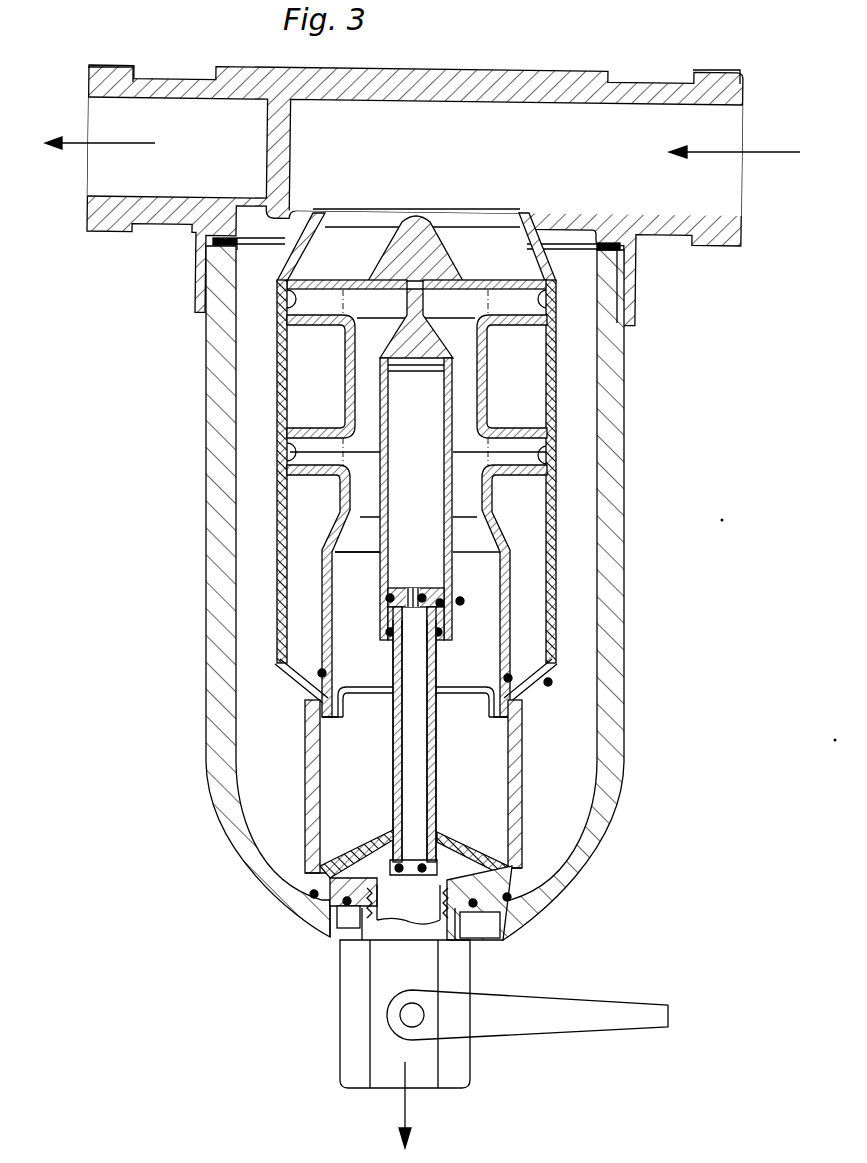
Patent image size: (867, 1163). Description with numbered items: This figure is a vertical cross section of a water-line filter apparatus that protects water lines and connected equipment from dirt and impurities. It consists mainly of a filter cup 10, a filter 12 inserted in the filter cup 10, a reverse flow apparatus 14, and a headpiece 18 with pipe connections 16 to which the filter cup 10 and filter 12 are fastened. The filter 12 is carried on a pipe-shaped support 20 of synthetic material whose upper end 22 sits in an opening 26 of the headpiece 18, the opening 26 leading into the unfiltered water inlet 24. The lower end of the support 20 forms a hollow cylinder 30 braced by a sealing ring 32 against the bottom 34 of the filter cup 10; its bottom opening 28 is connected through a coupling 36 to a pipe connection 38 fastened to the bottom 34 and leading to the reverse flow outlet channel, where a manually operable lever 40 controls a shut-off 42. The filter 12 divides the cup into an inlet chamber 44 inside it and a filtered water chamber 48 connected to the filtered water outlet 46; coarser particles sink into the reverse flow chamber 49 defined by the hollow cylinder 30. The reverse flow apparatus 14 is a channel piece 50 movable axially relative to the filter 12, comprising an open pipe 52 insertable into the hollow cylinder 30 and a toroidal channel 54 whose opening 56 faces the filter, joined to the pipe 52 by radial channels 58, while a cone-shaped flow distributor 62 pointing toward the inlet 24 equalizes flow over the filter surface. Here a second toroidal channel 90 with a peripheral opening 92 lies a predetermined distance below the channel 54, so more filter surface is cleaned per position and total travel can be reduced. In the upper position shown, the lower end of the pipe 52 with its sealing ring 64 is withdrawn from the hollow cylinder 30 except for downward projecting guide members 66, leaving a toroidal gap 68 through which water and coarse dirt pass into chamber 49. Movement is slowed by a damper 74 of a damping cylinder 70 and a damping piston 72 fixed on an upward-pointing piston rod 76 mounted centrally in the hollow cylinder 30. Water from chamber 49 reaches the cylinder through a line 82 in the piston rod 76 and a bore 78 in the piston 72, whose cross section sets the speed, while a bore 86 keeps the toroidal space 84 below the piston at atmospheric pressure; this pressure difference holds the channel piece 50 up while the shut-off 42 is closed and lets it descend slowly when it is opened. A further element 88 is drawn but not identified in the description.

The filter cup 10 is at (617, 404).
The filter 12 is at (558, 546).
The reverse flow apparatus 14 is at (497, 523).
The pipe connections 16 is at (98, 67).
The headpiece 18 is at (478, 80).
The pipe-shaped support 20 is at (548, 682).
The upper end 22 is at (527, 212).
The unfiltered water inlet 24 is at (722, 207).
The opening 26 is at (312, 222).
The bottom opening 28 is at (430, 930).
The hollow cylinder 30 is at (513, 828).
The sealing ring 32 is at (497, 915).
The bottom 34 is at (293, 868).
The coupling 36 is at (365, 941).
The pipe connection 38 is at (427, 1090).
The manually operable lever 40 is at (592, 1004).
The shut-off 42 is at (357, 1055).
The inlet chamber 44 is at (530, 357).
The filtered water outlet 46 is at (90, 208).
The filtered water chamber 48 is at (258, 387).
The reverse flow chamber 49 is at (338, 772).
The channel piece 50 is at (336, 517).
The open pipe 52 is at (330, 596).
The toroidal channel 54 is at (323, 290).
The opening 56 is at (283, 304).
The radial channels 58 is at (327, 326).
The cone-shaped flow distributor 62 is at (420, 232).
The sealing ring 64 is at (315, 675).
The guide members 66 is at (338, 712).
The toroidal gap 68 is at (465, 694).
The damping cylinder 70 is at (283, 451).
The damping piston 72 is at (394, 590).
The damper 74 is at (457, 601).
The piston rod 76 is at (420, 788).
The bore 78 is at (413, 588).
The line 82 is at (405, 812).
The toroidal space 84 is at (387, 620).
The bore 86 is at (406, 657).
The central tube 88 is at (420, 368).
The second toroidal channel 90 is at (510, 434).
The peripheral opening 92 is at (553, 455).